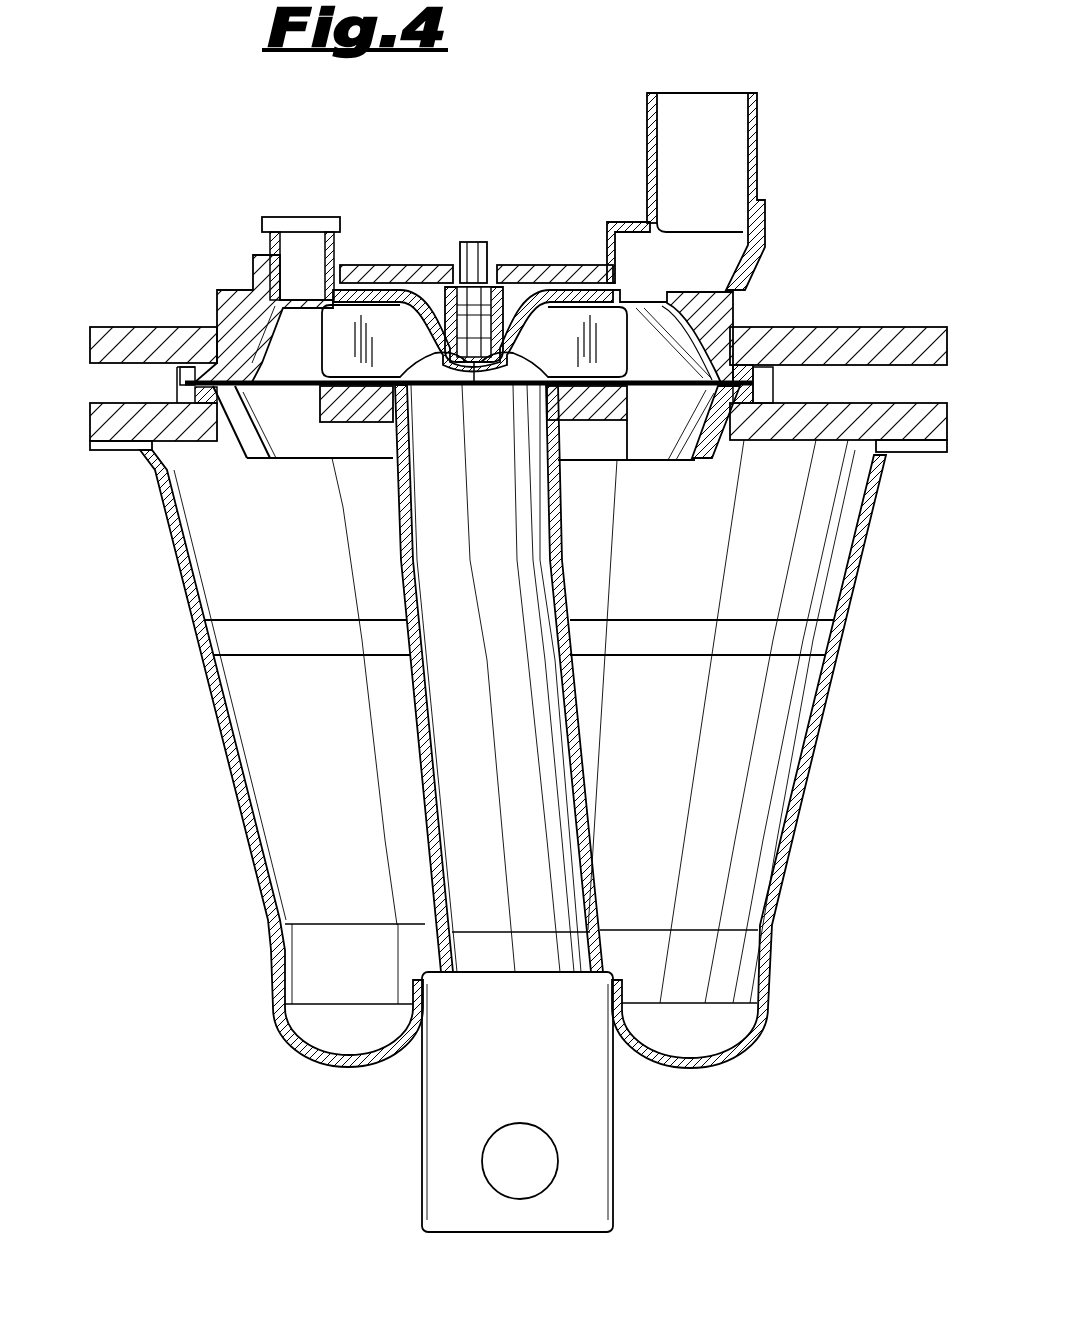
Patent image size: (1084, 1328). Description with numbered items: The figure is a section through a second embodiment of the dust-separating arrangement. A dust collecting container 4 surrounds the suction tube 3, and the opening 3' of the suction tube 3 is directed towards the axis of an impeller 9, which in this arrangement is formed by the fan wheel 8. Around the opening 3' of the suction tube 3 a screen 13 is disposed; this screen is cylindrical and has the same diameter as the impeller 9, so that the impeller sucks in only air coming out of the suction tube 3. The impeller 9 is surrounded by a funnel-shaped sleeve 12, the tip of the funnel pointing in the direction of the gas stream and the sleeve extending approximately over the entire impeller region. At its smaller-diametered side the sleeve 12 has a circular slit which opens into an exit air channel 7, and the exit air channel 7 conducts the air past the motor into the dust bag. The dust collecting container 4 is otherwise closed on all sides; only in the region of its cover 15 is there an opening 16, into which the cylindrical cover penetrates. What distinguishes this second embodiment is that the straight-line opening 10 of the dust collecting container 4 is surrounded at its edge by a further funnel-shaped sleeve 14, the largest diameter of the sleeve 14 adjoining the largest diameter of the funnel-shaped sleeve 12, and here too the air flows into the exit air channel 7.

The suction tube 3 is at (665, 678).
The opening of the suction tube 3' is at (425, 511).
The dust collecting container 4 is at (712, 893).
The exit air channel 7 is at (715, 140).
The fan wheel 8 is at (557, 327).
The impeller 9 is at (590, 327).
The straight-line opening of the dust collecting container 10 is at (660, 440).
The funnel-shaped sleeve 12 is at (703, 327).
The screen 13 is at (353, 403).
The funnel-shaped sleeve 14 is at (718, 425).
The cover 15 is at (802, 413).
The opening 16 is at (703, 420).